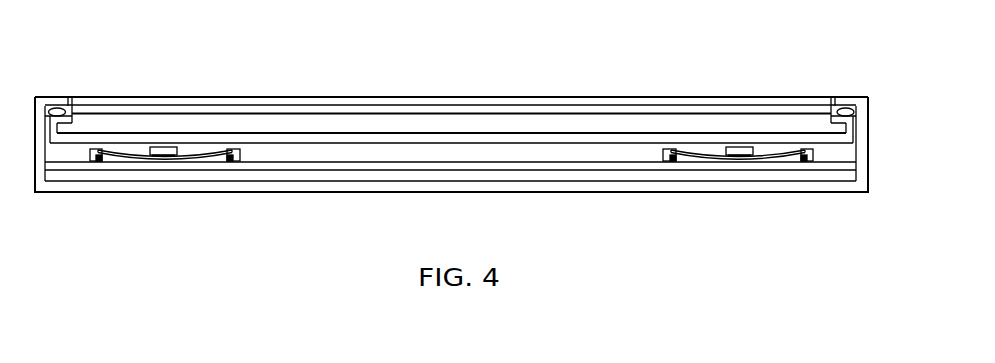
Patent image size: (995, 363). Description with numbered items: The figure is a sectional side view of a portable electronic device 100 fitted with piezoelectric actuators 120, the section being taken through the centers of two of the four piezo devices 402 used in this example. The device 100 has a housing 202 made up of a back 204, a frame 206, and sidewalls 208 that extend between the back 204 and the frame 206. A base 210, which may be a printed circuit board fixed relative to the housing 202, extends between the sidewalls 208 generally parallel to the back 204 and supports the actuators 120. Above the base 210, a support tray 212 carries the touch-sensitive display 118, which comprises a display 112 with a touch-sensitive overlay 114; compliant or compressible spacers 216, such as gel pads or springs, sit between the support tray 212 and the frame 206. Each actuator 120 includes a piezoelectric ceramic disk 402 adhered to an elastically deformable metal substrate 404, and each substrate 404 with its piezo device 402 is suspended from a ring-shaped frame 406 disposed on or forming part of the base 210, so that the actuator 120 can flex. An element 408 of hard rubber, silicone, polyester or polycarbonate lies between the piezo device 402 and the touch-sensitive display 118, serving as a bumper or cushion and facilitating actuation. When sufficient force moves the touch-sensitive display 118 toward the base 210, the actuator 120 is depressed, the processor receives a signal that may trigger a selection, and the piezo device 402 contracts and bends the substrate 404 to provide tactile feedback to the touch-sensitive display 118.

The portable electronic device 100 is at (634, 50).
The display 112 is at (393, 112).
The touch-sensitive overlay 114 is at (500, 100).
The touch-sensitive display 118 is at (322, 98).
The actuator 120 is at (163, 147).
The housing 202 is at (633, 192).
The back 204 is at (563, 188).
The frame 206 is at (47, 97).
The sidewalls 208 is at (862, 173).
The base 210 is at (477, 166).
The support tray 212 is at (410, 137).
The compliant spacers 216 is at (845, 107).
The piezo device 402 is at (165, 160).
The substrate 404 is at (102, 162).
The ring-shaped frame 406 is at (230, 162).
The element 408 is at (162, 148).